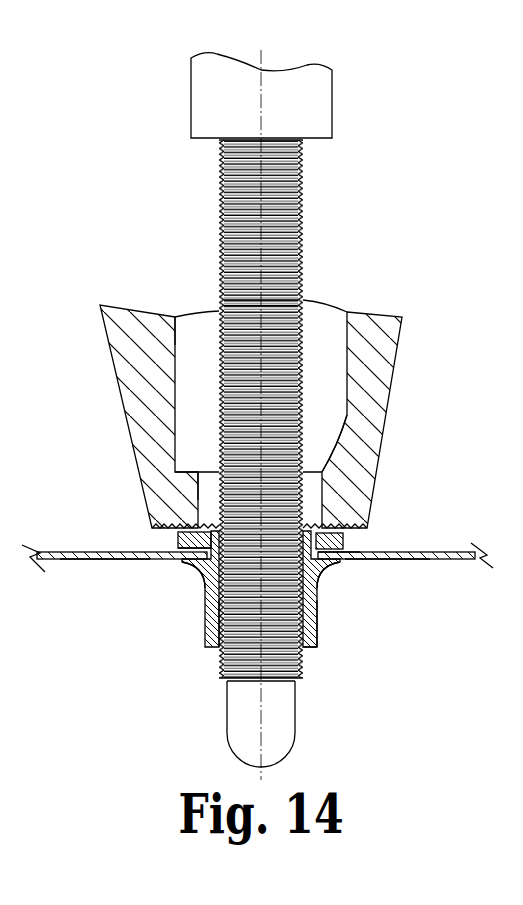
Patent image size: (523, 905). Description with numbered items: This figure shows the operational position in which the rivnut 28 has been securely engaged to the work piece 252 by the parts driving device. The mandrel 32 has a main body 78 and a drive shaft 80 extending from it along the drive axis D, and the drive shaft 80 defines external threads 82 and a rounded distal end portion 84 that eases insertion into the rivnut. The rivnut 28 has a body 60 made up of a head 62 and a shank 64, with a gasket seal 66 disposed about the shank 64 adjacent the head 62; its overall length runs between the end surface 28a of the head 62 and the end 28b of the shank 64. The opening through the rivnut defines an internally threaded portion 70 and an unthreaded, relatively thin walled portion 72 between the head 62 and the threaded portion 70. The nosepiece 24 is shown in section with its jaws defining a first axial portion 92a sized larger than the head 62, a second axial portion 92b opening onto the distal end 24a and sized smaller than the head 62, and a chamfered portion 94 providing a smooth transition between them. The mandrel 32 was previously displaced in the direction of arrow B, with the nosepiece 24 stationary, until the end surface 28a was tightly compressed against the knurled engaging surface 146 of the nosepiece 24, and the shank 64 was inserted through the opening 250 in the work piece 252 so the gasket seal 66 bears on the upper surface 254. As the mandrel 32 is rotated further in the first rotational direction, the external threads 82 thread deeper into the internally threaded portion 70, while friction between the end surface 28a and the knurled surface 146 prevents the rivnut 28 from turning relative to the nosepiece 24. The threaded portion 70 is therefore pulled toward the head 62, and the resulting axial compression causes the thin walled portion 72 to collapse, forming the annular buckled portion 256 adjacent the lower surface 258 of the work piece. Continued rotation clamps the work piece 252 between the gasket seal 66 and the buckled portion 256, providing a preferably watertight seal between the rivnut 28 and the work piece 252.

The direction arrow B is at (261, 50).
The drive axis D is at (264, 58).
The mandrel 32 is at (176, 100).
The main body 78 is at (333, 108).
The drive shaft 80 is at (307, 198).
The external threads 82 is at (305, 237).
The rounded distal end portion 84 is at (287, 743).
The nosepiece 24 is at (290, 407).
The distal end 24a is at (368, 537).
The first axial portion 92a is at (175, 349).
The second axial portion 92b is at (200, 474).
The chamfered portion 94 is at (342, 443).
The upper surface 254 is at (68, 550).
The lower surface 258 is at (102, 560).
The work piece 252 is at (441, 550).
The buckled portion 256 is at (330, 562).
The engaging surface 146 is at (348, 548).
The body 60 is at (150, 577).
The head 62 is at (177, 538).
The gasket seal 66 is at (177, 547).
The thin walled portion 72 is at (205, 582).
The internally threaded portion 70 is at (220, 650).
The rivnut 28 is at (375, 582).
The end surface of head 28a is at (316, 527).
The opening 250 is at (320, 586).
The shank 64 is at (316, 627).
The end of shank 28b is at (305, 647).